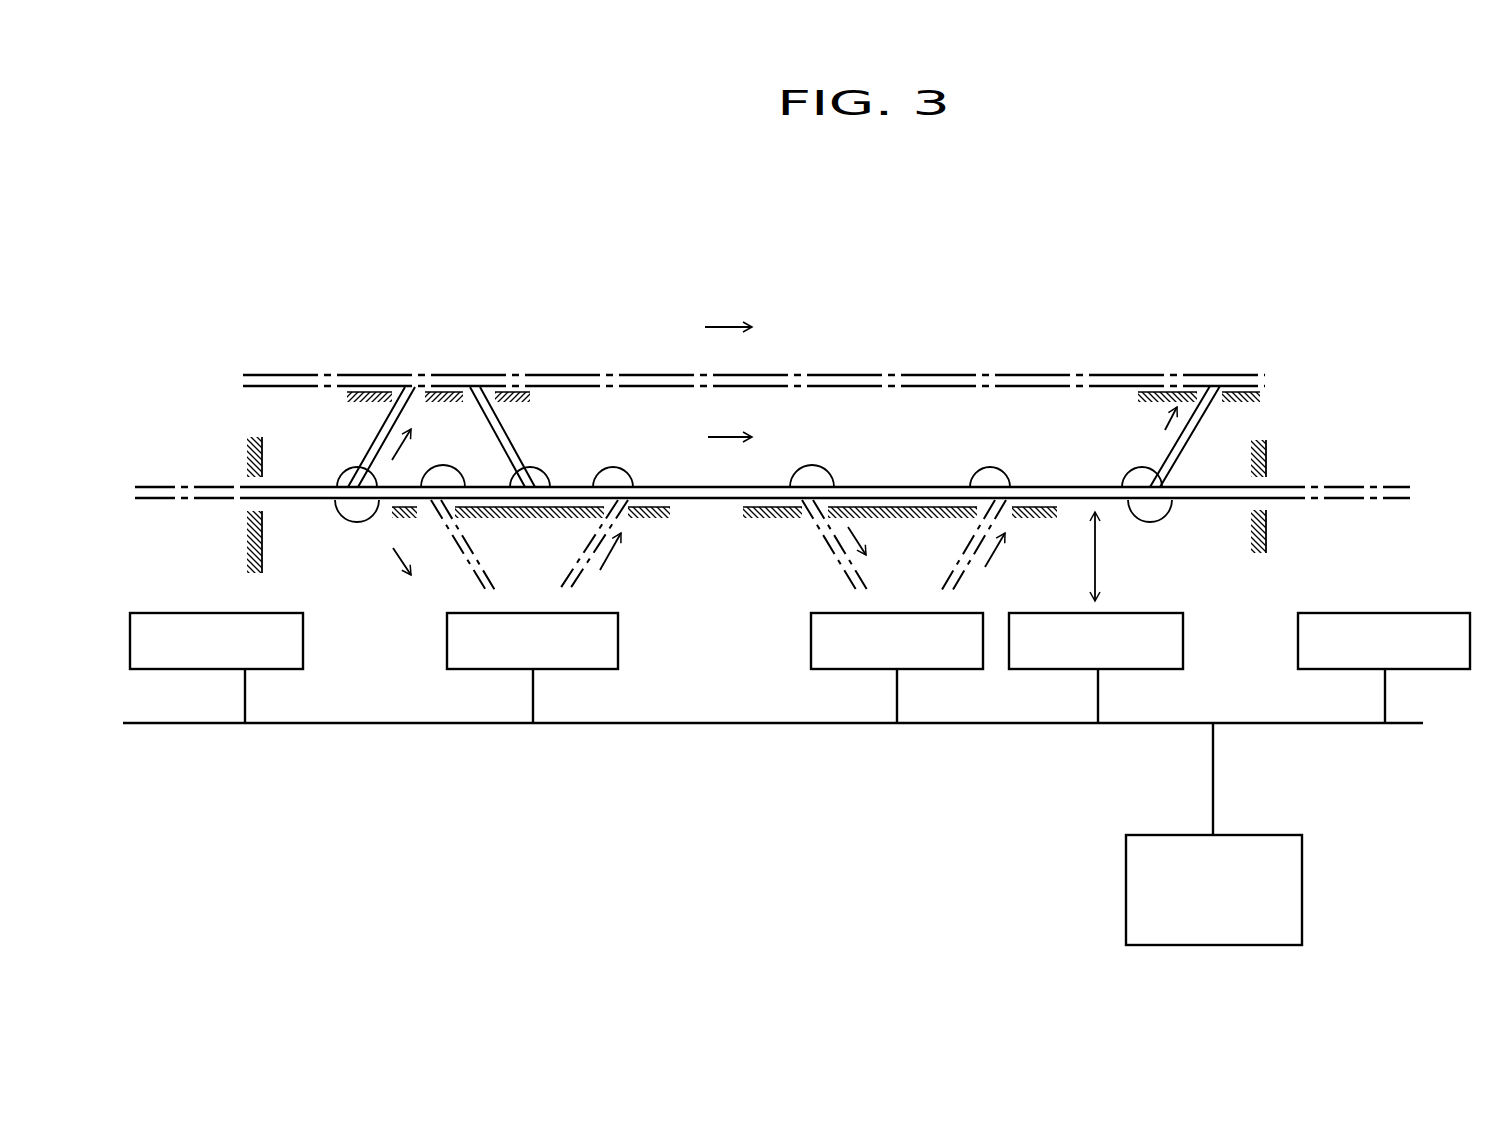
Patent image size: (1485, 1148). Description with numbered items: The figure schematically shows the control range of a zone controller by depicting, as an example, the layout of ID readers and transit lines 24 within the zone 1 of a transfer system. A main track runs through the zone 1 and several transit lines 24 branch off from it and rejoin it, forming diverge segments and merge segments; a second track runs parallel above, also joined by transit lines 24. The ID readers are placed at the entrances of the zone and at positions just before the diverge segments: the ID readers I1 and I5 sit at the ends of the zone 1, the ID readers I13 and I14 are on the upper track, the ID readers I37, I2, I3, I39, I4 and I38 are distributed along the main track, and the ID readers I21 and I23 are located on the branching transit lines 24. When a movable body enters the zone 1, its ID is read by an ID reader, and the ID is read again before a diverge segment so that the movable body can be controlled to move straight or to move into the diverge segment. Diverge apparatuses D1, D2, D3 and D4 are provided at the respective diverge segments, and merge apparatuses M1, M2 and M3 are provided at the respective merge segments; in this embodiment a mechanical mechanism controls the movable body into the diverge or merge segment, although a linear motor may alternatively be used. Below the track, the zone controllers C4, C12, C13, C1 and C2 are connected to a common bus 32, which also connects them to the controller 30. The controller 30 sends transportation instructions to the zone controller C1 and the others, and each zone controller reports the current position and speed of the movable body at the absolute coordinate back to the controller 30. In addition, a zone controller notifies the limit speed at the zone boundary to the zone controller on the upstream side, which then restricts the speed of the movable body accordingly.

The zone 1 is at (712, 547).
The transit line 24 is at (376, 437).
The controller 30 is at (1302, 897).
The bus 32 is at (773, 723).
The ID reader I1 is at (278, 533).
The ID reader I2 is at (469, 430).
The ID reader I3 is at (651, 464).
The ID reader I4 is at (1021, 464).
The ID reader I5 is at (1285, 533).
The ID reader I13 is at (450, 353).
The ID reader I14 is at (1250, 353).
The ID reader I21 is at (433, 549).
The ID reader I23 is at (806, 549).
The ID reader I37 is at (321, 455).
The ID reader I38 is at (1125, 451).
The ID reader I39 is at (779, 451).
The diverge apparatus D1 is at (357, 510).
The diverge apparatus D2 is at (443, 463).
The diverge apparatus D3 is at (820, 462).
The diverge apparatus D4 is at (1147, 508).
The merge apparatus M1 is at (542, 466).
The merge apparatus M2 is at (612, 461).
The merge apparatus M3 is at (980, 463).
The zone controller C1 is at (1096, 668).
The zone controller C2 is at (1384, 668).
The zone controller C4 is at (216, 668).
The zone controller C12 is at (532, 668).
The zone controller C13 is at (897, 668).